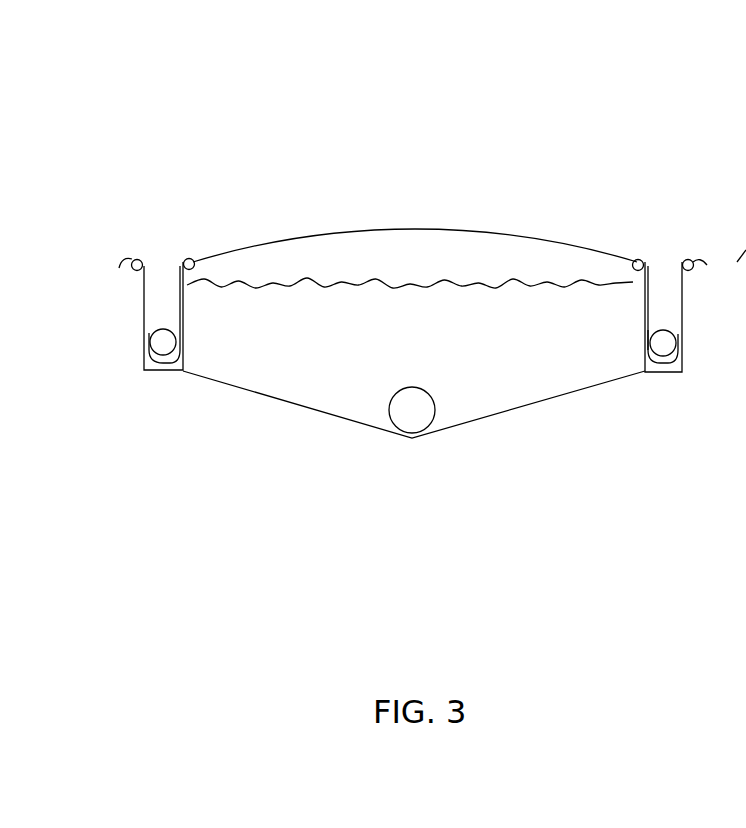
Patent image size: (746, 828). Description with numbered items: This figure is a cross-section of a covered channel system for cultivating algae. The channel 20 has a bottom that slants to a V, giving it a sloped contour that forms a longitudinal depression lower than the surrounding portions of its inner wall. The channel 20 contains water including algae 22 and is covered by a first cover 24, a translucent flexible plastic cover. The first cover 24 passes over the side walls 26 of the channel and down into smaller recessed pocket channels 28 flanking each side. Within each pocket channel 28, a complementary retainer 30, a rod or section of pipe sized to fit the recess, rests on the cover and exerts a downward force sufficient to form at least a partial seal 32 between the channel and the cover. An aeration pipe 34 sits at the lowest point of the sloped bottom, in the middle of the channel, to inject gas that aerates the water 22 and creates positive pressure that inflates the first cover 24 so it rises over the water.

The channel 20 is at (307, 408).
The water including algae 22 is at (518, 344).
The first cover 24 is at (563, 243).
The side walls 26 is at (187, 333).
The pocket channels 28 is at (145, 298).
The complementary retainer 30 is at (163, 343).
The seal 32 is at (187, 255).
The aeration pipe 34 is at (415, 412).